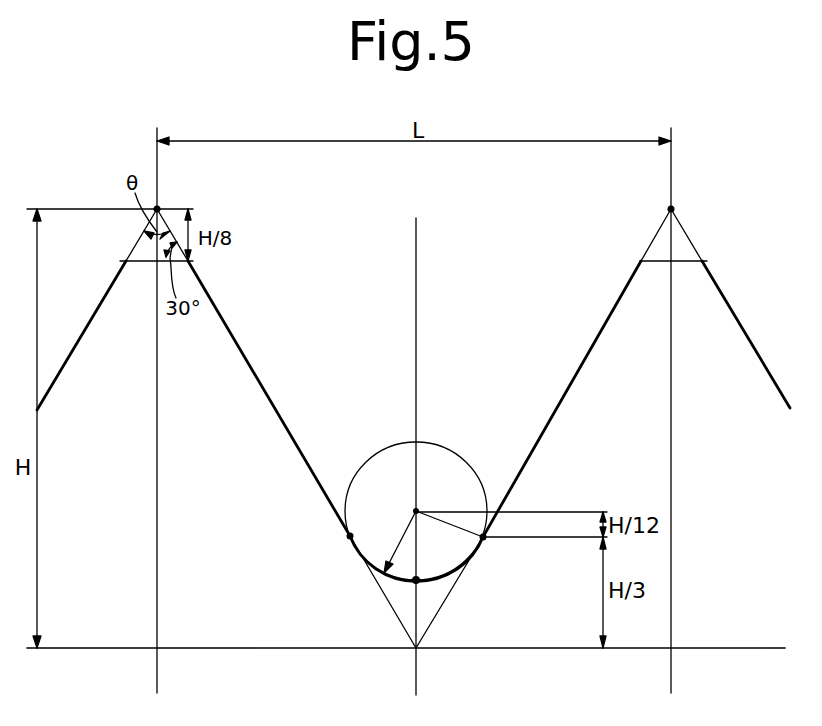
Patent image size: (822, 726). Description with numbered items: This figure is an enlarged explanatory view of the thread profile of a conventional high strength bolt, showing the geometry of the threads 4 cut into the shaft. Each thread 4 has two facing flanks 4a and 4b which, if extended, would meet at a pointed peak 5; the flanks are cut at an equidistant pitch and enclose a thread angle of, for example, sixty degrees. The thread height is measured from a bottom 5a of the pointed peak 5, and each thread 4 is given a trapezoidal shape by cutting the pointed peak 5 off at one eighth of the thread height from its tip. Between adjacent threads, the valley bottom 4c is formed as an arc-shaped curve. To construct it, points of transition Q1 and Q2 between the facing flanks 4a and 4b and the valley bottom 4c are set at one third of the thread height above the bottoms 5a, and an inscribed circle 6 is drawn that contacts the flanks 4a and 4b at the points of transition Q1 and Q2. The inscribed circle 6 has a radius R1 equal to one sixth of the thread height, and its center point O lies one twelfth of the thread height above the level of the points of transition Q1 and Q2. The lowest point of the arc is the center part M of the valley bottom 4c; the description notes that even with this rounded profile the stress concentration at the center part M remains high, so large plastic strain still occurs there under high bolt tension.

The thread 4 is at (123, 266).
The flank 4a is at (252, 368).
The flank 4b is at (88, 326).
The valley bottom 4c is at (416, 581).
The pointed peak 5 is at (157, 209).
The bottom 5a is at (225, 649).
The inscribed circle 6 is at (377, 458).
The center point O is at (416, 511).
The radius R1 is at (397, 548).
The point of transition Q1 is at (350, 536).
The point of transition Q2 is at (483, 537).
The center part M is at (417, 582).